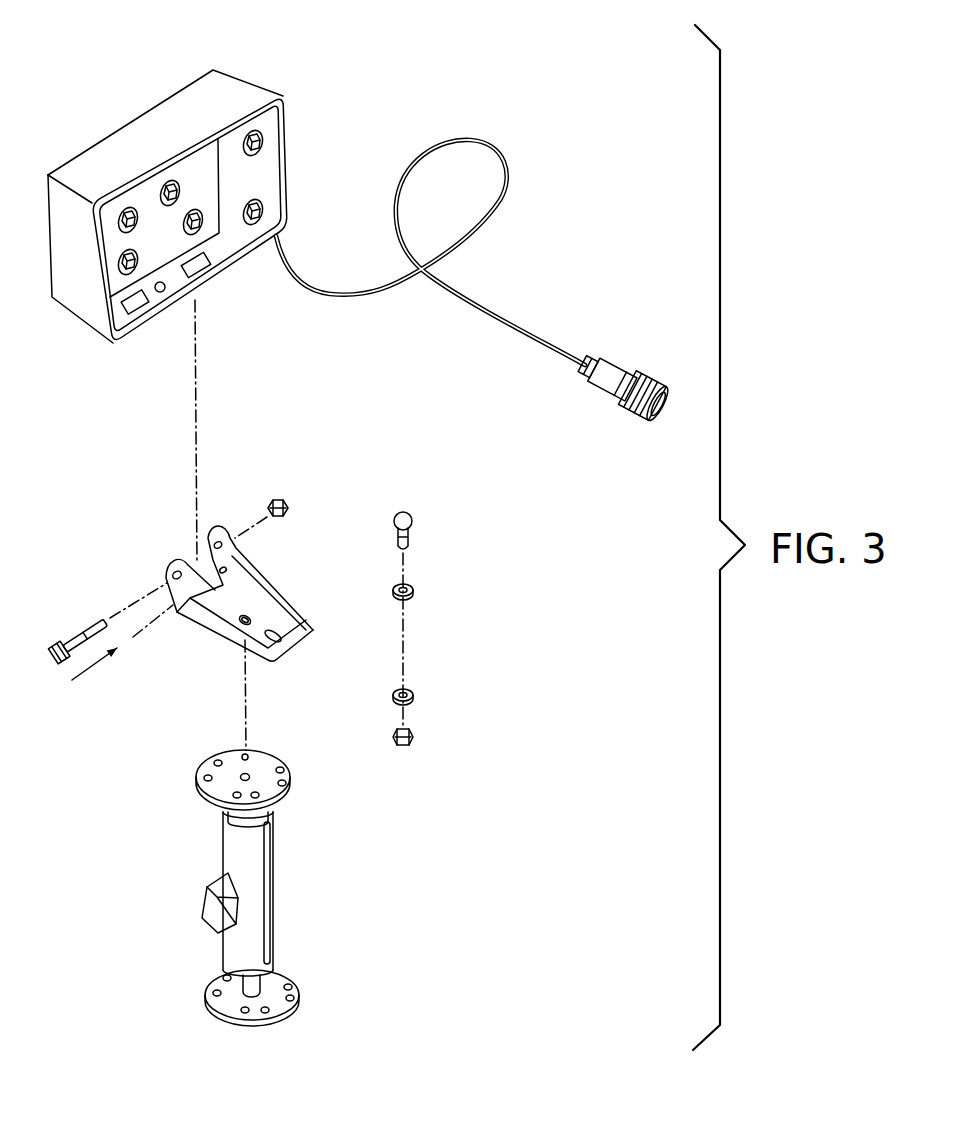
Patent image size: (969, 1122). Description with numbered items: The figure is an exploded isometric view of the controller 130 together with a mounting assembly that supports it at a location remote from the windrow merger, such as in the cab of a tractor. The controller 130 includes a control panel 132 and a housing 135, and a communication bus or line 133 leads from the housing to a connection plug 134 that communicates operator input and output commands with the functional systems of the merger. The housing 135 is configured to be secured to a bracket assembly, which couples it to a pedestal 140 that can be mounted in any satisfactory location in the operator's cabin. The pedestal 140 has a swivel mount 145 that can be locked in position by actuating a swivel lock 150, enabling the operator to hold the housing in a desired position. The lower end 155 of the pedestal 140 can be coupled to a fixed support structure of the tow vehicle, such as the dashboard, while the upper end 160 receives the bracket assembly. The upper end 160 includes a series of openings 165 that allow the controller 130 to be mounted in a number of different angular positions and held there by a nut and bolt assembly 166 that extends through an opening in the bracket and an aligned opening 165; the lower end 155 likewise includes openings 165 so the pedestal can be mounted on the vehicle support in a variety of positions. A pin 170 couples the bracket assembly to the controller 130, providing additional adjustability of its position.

The controller 130 is at (308, 104).
The control panel 132 is at (225, 170).
The communication bus or line 133 is at (498, 307).
The connection plug 134 is at (617, 378).
The housing 135 is at (128, 140).
The pedestal 140 is at (297, 877).
The swivel mount 145 is at (237, 952).
The swivel lock 150 is at (210, 905).
The lower end 155 is at (283, 1008).
The upper end 160 is at (262, 762).
The openings 165 is at (288, 782).
The nut and bolt assembly 166 is at (425, 633).
The pin 170 is at (72, 635).